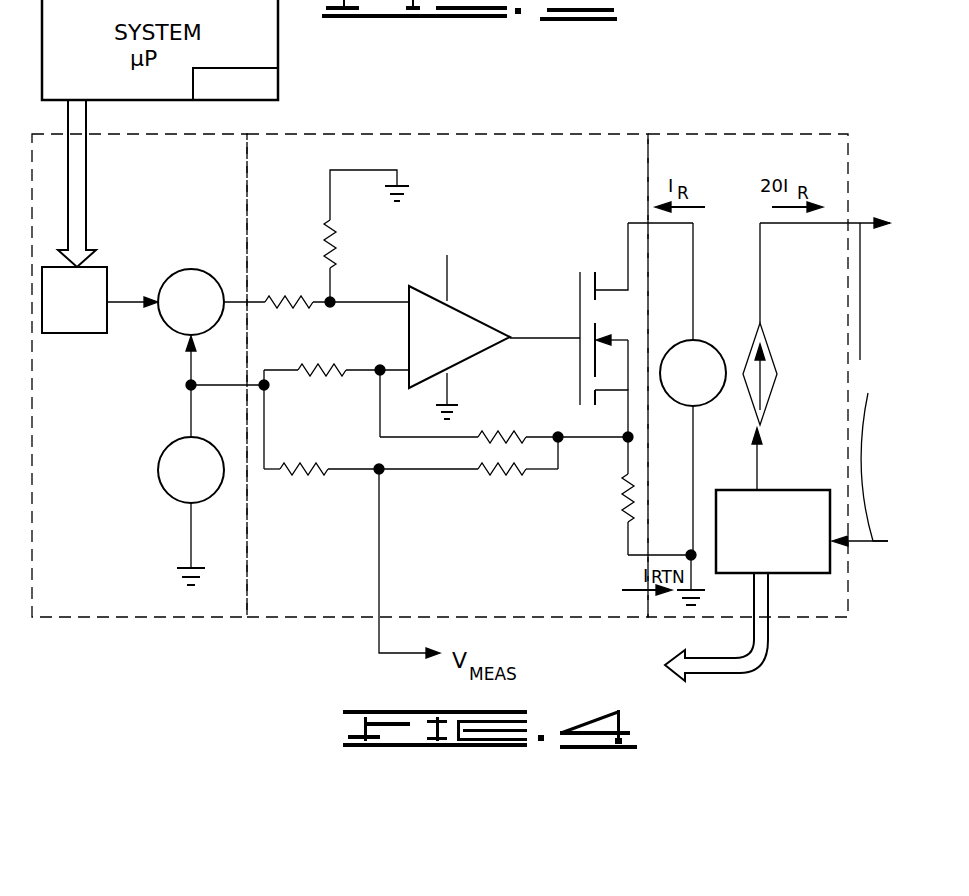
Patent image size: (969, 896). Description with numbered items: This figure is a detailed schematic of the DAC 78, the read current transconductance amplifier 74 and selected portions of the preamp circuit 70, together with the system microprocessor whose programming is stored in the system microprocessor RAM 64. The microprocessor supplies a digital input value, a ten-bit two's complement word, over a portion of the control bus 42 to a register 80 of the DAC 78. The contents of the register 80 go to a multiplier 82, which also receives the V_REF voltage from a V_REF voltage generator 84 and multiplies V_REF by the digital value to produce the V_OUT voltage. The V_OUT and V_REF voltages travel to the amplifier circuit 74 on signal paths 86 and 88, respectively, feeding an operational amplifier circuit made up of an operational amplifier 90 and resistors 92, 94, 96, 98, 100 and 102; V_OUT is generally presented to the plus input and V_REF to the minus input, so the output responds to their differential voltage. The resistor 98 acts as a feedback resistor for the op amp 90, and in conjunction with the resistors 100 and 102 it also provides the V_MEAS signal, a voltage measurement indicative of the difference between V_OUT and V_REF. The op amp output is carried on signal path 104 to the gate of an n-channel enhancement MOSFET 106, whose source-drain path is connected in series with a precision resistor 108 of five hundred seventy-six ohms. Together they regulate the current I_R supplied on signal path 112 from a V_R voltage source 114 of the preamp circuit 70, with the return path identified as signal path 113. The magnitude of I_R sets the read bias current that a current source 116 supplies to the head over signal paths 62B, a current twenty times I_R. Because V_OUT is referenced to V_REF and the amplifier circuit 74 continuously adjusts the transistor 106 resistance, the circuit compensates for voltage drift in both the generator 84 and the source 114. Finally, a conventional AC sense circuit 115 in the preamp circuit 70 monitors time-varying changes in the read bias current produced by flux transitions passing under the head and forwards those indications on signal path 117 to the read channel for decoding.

The control bus 42 is at (75, 180).
The system microprocessor RAM 64 is at (270, 85).
The preamp circuit 70 is at (720, 136).
The read current transconductance amplifier 74 is at (470, 136).
The DAC 78 is at (65, 618).
The register 80 is at (50, 335).
The multiplier 82 is at (182, 270).
The V_REF voltage generator 84 is at (157, 465).
The signal path 86 is at (236, 300).
The signal path 88 is at (253, 382).
The operational amplifier 90 is at (468, 333).
The resistor 92 is at (302, 296).
The resistor 94 is at (318, 226).
The resistor 96 is at (323, 368).
The feedback resistor 98 is at (490, 437).
The resistor 100 is at (298, 467).
The resistor 102 is at (505, 470).
The signal path 104 is at (535, 340).
The n-channel enhancement MOSFET 106 is at (580, 272).
The resistor 108 is at (620, 497).
The signal path 112 is at (566, 300).
The signal path 113 is at (625, 558).
The V_R voltage source 114 is at (715, 342).
The AC sense circuit 115 is at (778, 490).
The current source 116 is at (760, 338).
The signal path 117 is at (723, 673).
The signal paths 62B is at (863, 384).